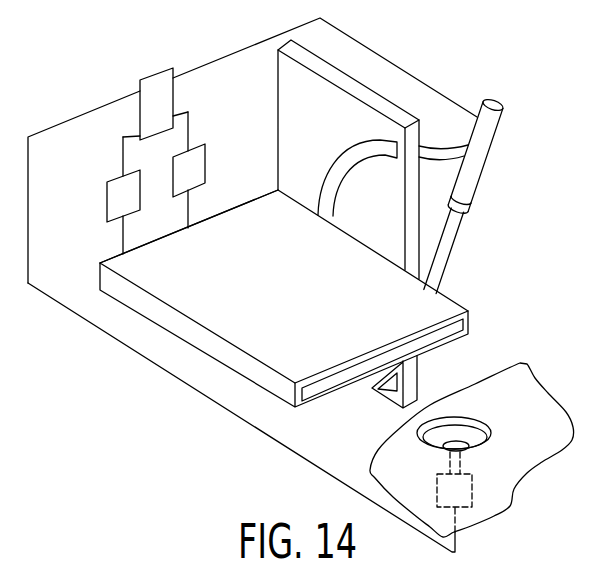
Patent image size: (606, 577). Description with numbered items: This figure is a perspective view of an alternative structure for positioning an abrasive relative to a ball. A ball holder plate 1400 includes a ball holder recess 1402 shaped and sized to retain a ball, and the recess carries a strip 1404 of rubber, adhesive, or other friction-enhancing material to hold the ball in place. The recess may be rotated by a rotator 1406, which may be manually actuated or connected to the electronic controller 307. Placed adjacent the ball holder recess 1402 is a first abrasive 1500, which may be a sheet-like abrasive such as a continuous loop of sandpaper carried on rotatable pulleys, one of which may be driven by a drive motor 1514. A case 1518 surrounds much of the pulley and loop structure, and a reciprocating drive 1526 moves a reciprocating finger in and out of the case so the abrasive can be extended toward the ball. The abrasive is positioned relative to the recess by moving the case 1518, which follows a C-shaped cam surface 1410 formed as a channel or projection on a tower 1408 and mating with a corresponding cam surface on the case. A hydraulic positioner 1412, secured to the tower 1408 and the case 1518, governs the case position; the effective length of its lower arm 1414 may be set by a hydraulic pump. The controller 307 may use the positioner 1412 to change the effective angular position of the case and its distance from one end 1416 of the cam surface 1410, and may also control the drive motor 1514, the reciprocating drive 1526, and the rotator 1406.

The electronic controller 307 is at (156, 74).
The drive motor 1514 is at (107, 217).
The reciprocating drive 1526 is at (200, 145).
The case 1518 is at (240, 205).
The tower 1408 is at (373, 88).
The C-shaped cam surface 1410 is at (337, 150).
The hydraulic positioner 1412 is at (492, 135).
The end of cam surface 1416 is at (380, 157).
The hydraulic positioner lower arm 1414 is at (452, 242).
The first abrasive 1500 is at (294, 390).
The ball holder plate 1400 is at (507, 376).
The strip 1404 is at (468, 418).
The ball holder recess 1402 is at (417, 432).
The rotator 1406 is at (472, 495).